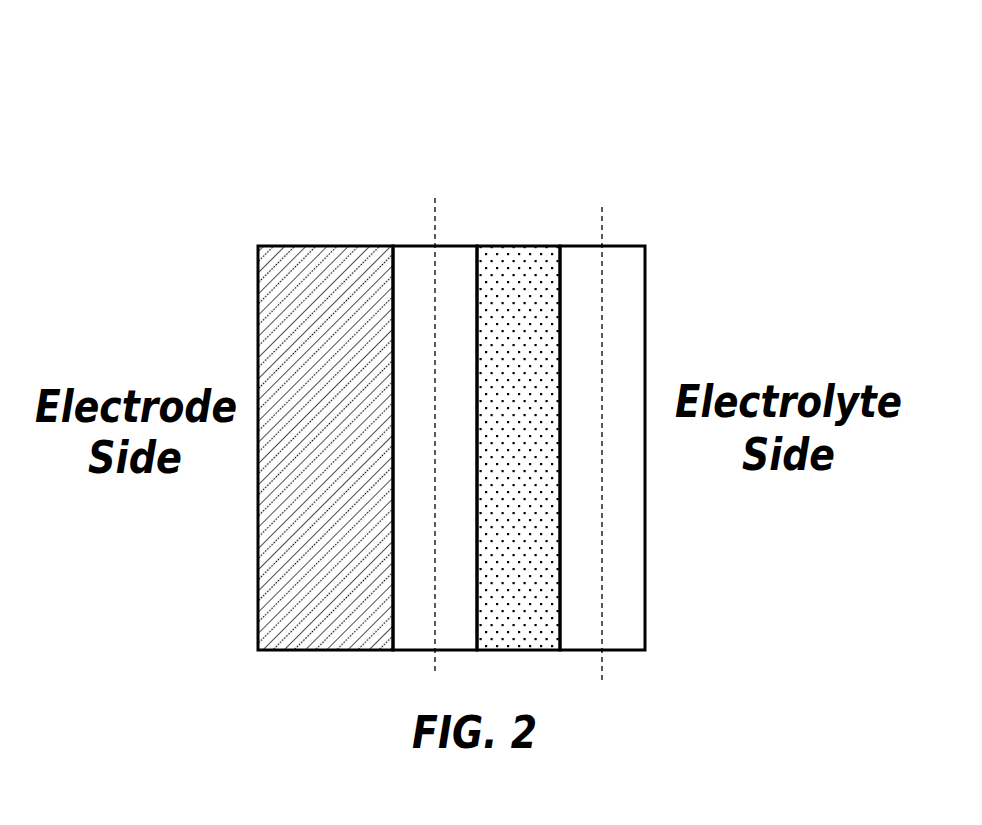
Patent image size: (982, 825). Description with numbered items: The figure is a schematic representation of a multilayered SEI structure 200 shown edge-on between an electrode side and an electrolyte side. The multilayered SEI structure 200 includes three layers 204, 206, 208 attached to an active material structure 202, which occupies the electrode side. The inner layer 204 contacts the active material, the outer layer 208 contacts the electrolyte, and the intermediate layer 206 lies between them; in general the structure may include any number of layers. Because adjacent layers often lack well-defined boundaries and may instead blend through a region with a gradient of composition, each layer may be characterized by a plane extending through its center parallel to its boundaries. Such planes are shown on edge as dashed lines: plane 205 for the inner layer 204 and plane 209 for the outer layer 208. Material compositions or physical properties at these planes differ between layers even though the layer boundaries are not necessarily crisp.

The multilayered SEI structure 200 is at (240, 80).
The active material structure 202 is at (337, 246).
The inner layer 204 is at (413, 246).
The center plane of inner layer 205 is at (441, 182).
The layer 206 is at (532, 246).
The outer layer 208 is at (645, 246).
The center plane of outer layer 209 is at (604, 190).